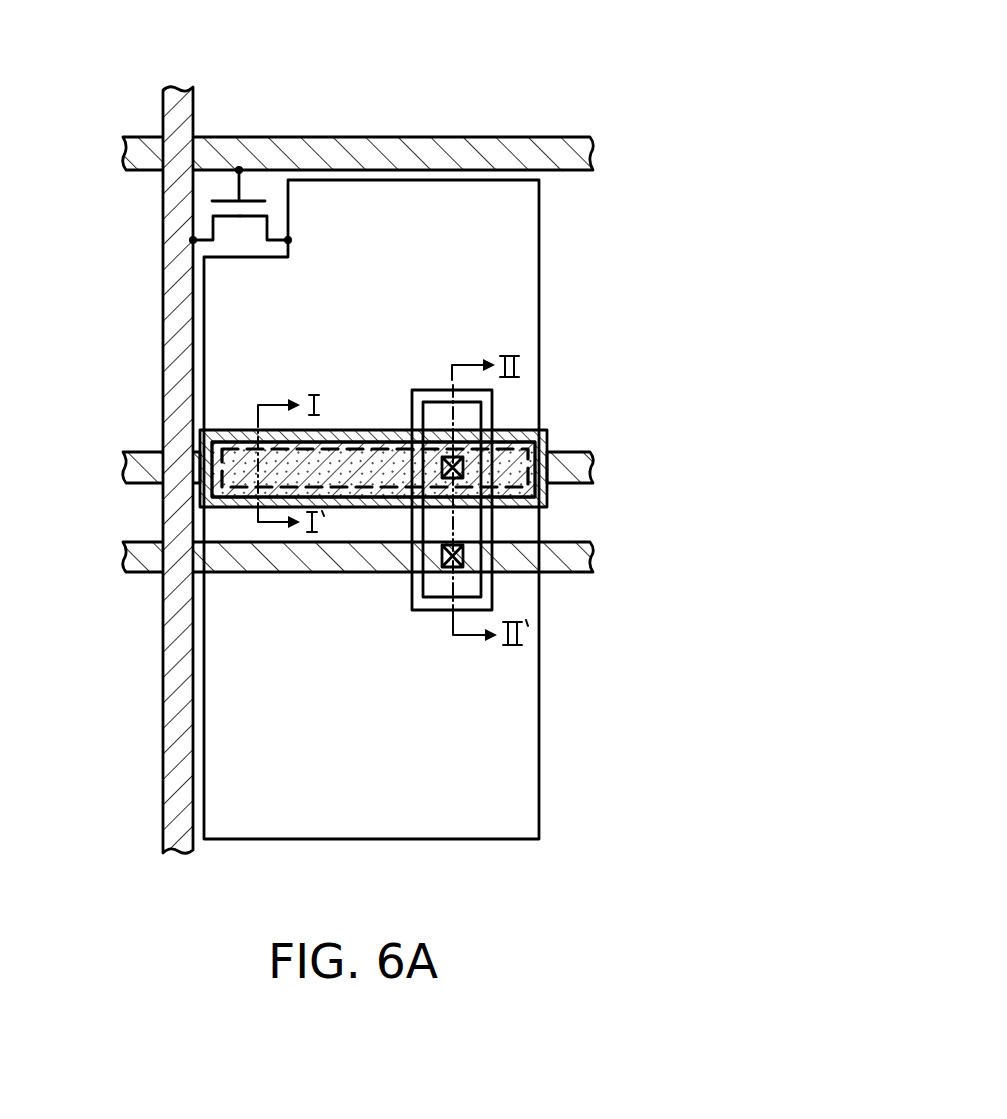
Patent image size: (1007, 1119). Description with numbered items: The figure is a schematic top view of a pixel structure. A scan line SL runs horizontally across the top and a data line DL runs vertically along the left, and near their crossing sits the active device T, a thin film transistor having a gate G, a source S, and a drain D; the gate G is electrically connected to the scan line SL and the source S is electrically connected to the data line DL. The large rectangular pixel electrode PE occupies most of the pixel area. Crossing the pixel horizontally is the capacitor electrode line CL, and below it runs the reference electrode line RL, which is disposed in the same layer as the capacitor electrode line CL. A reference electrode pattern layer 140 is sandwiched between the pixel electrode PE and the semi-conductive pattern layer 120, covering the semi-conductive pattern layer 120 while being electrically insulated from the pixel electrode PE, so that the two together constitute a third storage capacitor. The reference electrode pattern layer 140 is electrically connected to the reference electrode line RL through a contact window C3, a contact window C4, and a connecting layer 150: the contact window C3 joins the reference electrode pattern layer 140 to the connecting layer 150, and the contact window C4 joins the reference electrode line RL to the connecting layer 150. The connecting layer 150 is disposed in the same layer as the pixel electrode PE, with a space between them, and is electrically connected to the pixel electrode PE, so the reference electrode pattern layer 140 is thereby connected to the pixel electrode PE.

The active device T is at (254, 124).
The source S is at (204, 233).
The gate G is at (250, 198).
The drain D is at (272, 233).
The data line DL is at (168, 101).
The scan line SL is at (138, 155).
The pixel electrode PE is at (540, 227).
The reference electrode pattern layer 140 is at (340, 438).
The contact window C3 is at (441, 465).
The semi-conductive pattern layer 120 is at (517, 433).
The capacitor electrode line CL is at (582, 467).
The connecting layer 150 is at (472, 527).
The reference electrode line RL is at (582, 555).
The contact window C4 is at (441, 564).